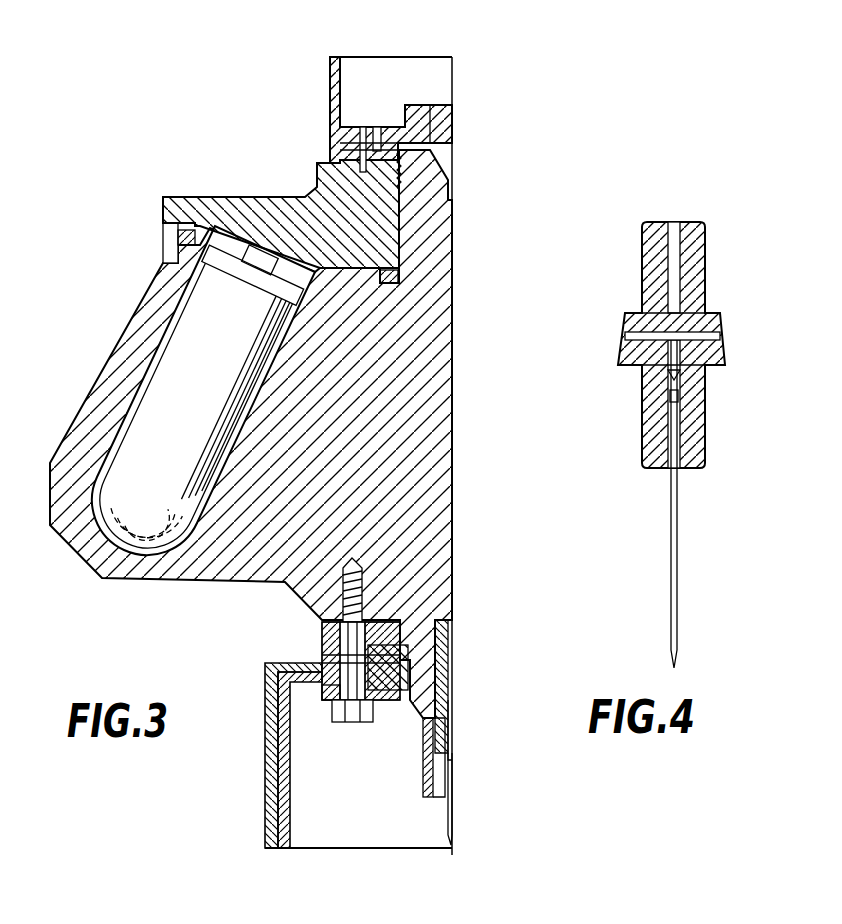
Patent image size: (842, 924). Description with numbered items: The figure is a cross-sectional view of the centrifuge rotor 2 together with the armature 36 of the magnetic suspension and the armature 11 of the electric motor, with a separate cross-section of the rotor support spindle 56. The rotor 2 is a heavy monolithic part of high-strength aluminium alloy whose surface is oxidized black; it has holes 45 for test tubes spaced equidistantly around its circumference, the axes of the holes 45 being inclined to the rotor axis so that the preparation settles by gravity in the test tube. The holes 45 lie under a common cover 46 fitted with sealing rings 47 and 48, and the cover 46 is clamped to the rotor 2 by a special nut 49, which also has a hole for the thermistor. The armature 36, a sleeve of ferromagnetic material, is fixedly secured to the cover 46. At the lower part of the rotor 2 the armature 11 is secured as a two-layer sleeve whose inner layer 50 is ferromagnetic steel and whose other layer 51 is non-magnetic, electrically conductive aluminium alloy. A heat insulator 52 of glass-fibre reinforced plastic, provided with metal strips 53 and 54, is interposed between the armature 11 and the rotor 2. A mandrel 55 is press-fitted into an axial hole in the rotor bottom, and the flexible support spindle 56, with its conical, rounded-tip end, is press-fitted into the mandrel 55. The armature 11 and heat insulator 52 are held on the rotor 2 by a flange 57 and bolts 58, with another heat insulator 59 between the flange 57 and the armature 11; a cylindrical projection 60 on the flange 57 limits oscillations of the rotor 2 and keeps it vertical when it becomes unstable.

In FIG. 3, the rotor 2 is at (142, 308).
In FIG. 3, the armature of the electric motor 11 is at (337, 755).
In FIG. 3, the armature of the magnetic suspension 36 is at (331, 92).
In FIG. 3, the holes for test tubes 45 is at (166, 565).
In FIG. 3, the cover 46 is at (206, 197).
In FIG. 3, the sealing ring 47 is at (177, 240).
In FIG. 3, the sealing ring 48 is at (400, 285).
In FIG. 3, the nut 49 is at (394, 127).
In FIG. 3, the inner layer 50 is at (290, 835).
In FIG. 3, the outer layer 51 is at (266, 766).
In FIG. 3, the heat insulator 52 is at (322, 640).
In FIG. 3, the metal strip 53 is at (322, 625).
In FIG. 3, the metal strip 54 is at (322, 659).
In FIG. 3, the mandrel 55 is at (448, 652).
In FIG. 4, the mandrel 55 is at (647, 258).
In FIG. 3, the flexible support spindle 56 is at (452, 778).
In FIG. 4, the flexible support spindle 56 is at (671, 552).
In FIG. 3, the flange 57 is at (395, 700).
In FIG. 3, the bolts 58 is at (346, 722).
In FIG. 3, the heat insulator 59 is at (325, 690).
In FIG. 3, the cylindrical projection 60 is at (423, 772).